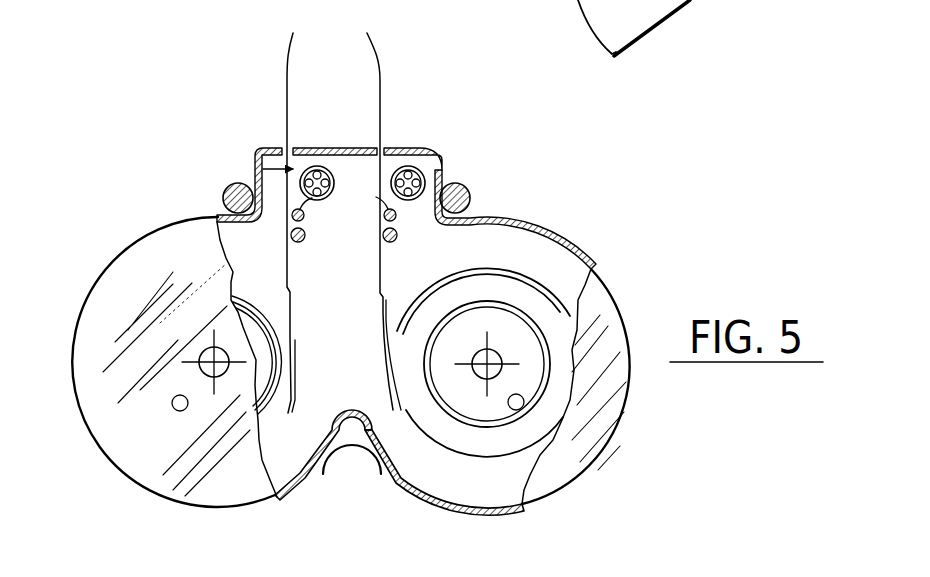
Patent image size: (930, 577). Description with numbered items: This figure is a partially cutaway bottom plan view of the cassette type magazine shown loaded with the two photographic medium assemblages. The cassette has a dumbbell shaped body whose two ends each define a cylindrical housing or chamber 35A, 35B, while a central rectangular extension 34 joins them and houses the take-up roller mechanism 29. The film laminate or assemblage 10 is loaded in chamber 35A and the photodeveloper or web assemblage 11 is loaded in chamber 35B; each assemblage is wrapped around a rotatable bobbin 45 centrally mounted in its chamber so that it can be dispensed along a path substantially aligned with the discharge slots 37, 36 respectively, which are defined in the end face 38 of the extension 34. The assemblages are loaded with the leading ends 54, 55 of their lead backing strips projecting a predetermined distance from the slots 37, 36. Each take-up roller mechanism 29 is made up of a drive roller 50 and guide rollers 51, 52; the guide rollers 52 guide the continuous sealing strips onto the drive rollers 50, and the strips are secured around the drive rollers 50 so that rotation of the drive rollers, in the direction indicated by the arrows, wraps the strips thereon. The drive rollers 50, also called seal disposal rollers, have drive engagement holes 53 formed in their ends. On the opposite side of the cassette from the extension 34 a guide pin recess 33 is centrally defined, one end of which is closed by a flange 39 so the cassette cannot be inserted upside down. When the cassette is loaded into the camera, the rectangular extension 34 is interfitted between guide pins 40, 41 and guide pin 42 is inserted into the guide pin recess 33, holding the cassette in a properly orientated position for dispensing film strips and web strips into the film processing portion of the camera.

The film laminate or assemblage 10 is at (412, 289).
The photodeveloper or web assemblage 11 is at (264, 292).
The take-up roller mechanism 29 is at (257, 154).
The guide pin recess 33 is at (359, 447).
The rectangular extension 34 is at (446, 168).
The cylindrical housing (chamber) 35A is at (592, 266).
The cylindrical housing (chamber) 35B is at (108, 267).
The slot 36 is at (292, 131).
The slot 37 is at (384, 134).
The end face 38 is at (348, 148).
The flange 39 is at (343, 447).
The guide pin 40 is at (225, 191).
The guide pin 41 is at (470, 191).
The guide pin 42 is at (350, 447).
The rotatable bobbin 45 is at (258, 320).
The drive roller 50 is at (375, 191).
The guide roller 51 is at (383, 215).
The guide roller 52 is at (382, 236).
The drive engagement hole 53 is at (415, 158).
The leading end 54 is at (374, 209).
The leading end 55 is at (293, 210).